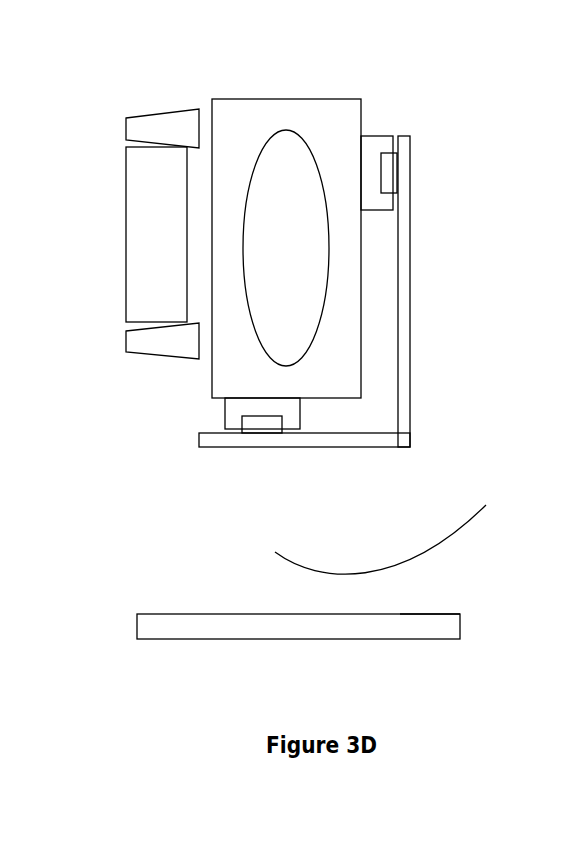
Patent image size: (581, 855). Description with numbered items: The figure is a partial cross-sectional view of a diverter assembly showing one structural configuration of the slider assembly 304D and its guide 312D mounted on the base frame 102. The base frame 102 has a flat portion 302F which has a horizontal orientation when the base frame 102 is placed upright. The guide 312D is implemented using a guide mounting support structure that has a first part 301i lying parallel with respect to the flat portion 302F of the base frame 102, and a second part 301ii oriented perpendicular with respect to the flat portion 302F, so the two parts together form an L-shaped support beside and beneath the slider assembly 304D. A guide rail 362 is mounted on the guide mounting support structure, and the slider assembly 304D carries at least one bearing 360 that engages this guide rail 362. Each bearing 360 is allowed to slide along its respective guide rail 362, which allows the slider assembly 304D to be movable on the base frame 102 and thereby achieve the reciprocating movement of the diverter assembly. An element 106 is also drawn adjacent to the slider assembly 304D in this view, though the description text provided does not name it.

The lens 106 is at (150, 170).
The slider assembly 304D is at (337, 164).
The second part 301ii is at (410, 242).
The first part 301i is at (305, 440).
The bearing 360 is at (225, 413).
The guide rail 362 is at (258, 420).
The guide 312D is at (412, 503).
The base frame 102 is at (147, 625).
The flat portion 302F is at (423, 613).